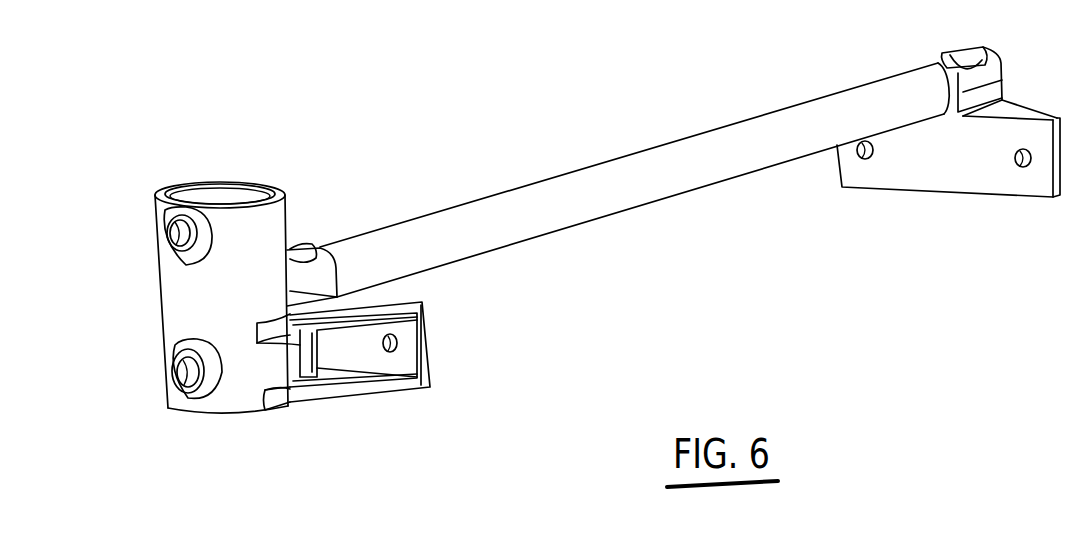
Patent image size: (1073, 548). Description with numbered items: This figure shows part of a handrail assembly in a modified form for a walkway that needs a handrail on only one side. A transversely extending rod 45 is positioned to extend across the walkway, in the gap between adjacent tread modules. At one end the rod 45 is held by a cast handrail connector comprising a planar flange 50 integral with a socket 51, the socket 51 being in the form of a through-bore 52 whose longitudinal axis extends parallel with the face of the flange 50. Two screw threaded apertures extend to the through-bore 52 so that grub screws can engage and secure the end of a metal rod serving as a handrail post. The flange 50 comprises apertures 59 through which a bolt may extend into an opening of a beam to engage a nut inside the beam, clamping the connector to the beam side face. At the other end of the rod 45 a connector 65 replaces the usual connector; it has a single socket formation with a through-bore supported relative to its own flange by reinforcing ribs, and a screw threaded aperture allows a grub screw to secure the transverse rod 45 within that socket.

The transverse rod 45 is at (627, 190).
The planar flange 50 is at (430, 313).
The socket 51 is at (158, 188).
The through-bore 52 is at (227, 200).
The apertures 59 is at (395, 345).
The connector 65 is at (940, 168).